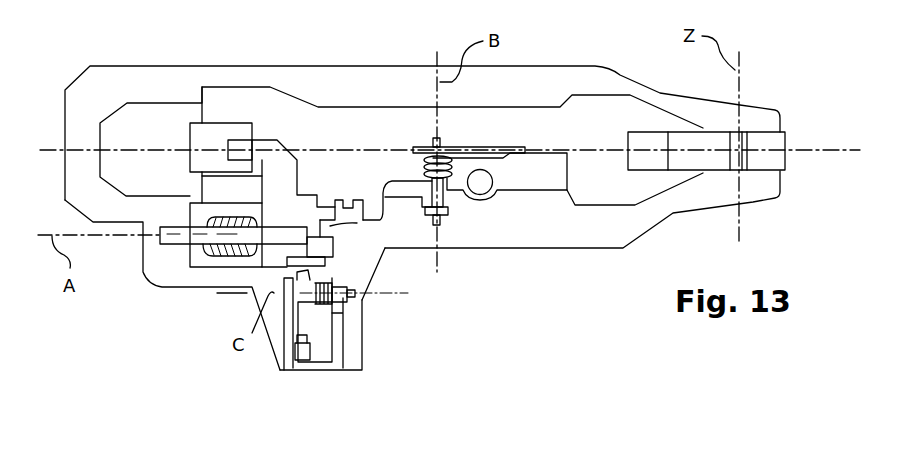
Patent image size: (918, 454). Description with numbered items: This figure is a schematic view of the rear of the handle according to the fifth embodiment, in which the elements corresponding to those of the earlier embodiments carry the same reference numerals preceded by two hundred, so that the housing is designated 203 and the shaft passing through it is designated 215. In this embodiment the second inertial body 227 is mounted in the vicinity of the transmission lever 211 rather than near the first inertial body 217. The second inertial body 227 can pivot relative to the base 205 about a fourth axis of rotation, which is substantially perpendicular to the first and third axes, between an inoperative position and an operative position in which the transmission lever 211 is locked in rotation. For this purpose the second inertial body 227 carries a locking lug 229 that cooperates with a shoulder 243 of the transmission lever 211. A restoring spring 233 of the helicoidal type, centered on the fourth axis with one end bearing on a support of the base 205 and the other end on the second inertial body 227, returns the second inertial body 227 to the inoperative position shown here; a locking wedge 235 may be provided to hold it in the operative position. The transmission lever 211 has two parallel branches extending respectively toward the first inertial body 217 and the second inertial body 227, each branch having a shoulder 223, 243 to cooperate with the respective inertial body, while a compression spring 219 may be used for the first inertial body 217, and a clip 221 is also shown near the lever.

The housing 203 is at (347, 106).
The base 205 is at (150, 281).
The transmission lever 211 is at (177, 197).
The shaft 215 is at (190, 270).
The first inertial body 217 is at (537, 183).
The compression spring 219 is at (403, 163).
The clip bracket 221 is at (357, 223).
The shoulder 223 is at (312, 238).
The second inertial body 227 is at (320, 350).
The locking lug 229 is at (312, 274).
The restoring spring 233 is at (342, 302).
The locking wedge 235 is at (295, 348).
The shoulder 243 is at (287, 261).